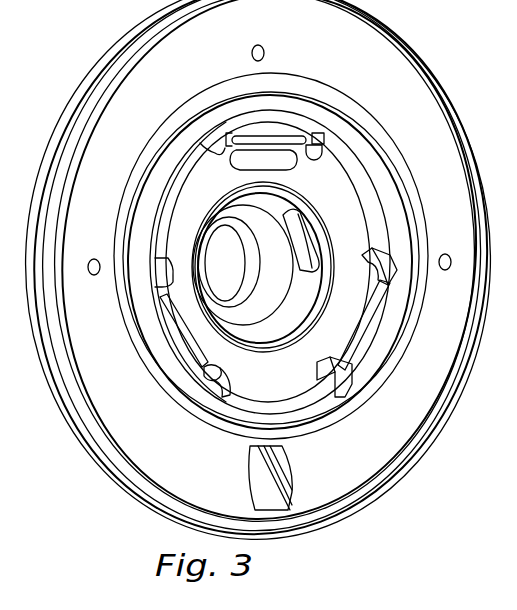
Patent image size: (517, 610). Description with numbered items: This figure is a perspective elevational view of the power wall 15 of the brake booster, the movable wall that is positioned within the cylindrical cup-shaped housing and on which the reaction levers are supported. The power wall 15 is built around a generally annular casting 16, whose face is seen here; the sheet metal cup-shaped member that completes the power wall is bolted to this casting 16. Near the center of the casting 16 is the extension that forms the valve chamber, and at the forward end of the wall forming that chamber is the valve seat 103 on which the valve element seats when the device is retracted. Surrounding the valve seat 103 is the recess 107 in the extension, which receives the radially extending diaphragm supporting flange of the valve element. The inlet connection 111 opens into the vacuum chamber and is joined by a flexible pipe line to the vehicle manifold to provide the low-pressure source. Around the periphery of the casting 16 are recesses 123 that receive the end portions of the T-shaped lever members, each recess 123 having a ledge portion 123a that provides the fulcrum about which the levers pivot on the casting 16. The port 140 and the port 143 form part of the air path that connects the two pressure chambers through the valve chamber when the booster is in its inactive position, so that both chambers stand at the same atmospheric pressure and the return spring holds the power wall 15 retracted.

The power wall 15 is at (125, 36).
The annular casting 16 is at (100, 125).
The ledge portion 123a is at (273, 138).
The recess 123 is at (321, 135).
The port 140 is at (248, 160).
The inlet connection 111 is at (297, 237).
The recess 107 is at (302, 330).
The valve seat 103 is at (267, 317).
The port 143 is at (258, 490).